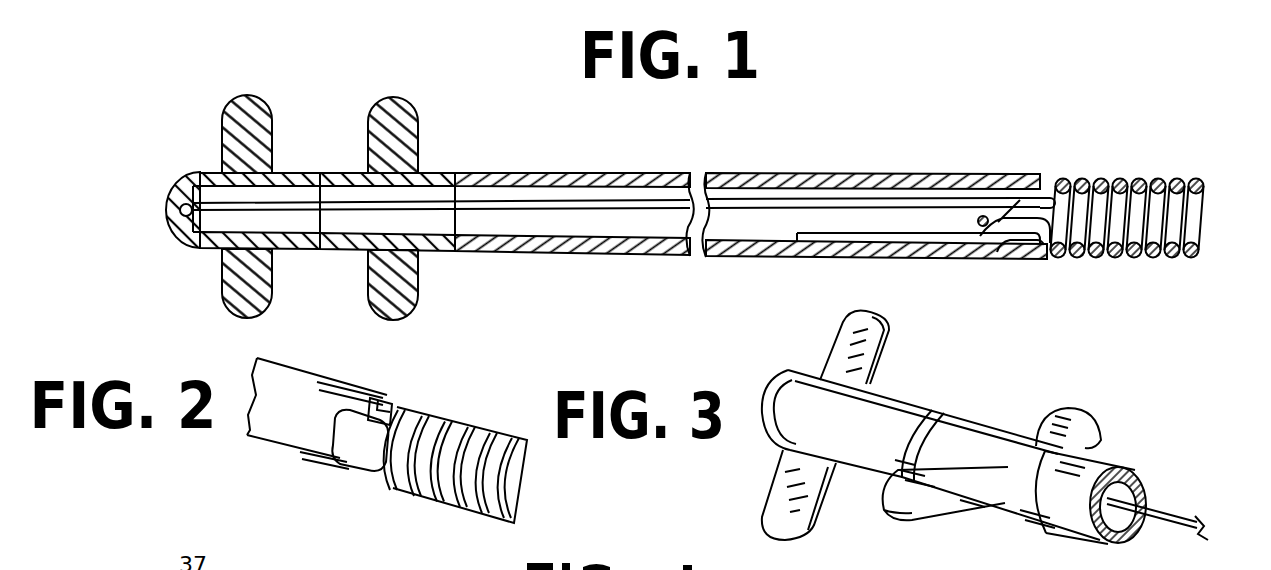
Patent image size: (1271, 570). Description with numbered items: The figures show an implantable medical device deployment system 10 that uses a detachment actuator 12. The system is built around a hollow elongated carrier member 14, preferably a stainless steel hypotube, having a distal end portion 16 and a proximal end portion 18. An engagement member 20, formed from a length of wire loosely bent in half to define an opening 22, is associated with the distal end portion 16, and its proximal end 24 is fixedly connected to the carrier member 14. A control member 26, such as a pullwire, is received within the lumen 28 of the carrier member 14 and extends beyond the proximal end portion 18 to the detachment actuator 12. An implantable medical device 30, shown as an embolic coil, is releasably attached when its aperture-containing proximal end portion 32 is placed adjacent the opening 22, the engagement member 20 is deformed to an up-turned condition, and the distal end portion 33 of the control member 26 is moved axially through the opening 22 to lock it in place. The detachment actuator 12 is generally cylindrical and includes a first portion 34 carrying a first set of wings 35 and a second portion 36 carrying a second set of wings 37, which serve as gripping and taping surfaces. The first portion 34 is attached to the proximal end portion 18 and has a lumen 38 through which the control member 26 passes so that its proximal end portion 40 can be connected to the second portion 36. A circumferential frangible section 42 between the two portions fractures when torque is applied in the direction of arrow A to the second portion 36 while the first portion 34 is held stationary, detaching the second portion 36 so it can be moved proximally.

In FIG. 1, the implantable medical device deployment system 10 is at (846, 141).
In FIG. 1, the detachment actuator 12 is at (325, 108).
In FIG. 1, the carrier member 14 is at (640, 257).
In FIG. 3, the carrier member 14 is at (1157, 519).
In FIG. 1, the distal end portion 16 is at (1003, 177).
In FIG. 1, the proximal end portion 18 is at (473, 172).
In FIG. 1, the engagement member 20 is at (953, 232).
In FIG. 2, the engagement member 20 is at (390, 412).
In FIG. 2, the opening 22 is at (355, 460).
In FIG. 1, the proximal end of the engagement member 24 is at (797, 248).
In FIG. 1, the control member 26 is at (620, 202).
In FIG. 1, the lumen 28 is at (710, 250).
In FIG. 1, the implantable medical device 30 is at (1104, 175).
In FIG. 2, the implantable medical device 30 is at (460, 465).
In FIG. 2, the proximal end portion of the implantable medical device 32 is at (365, 462).
In FIG. 1, the distal end portion of the control member 33 is at (1045, 205).
In FIG. 2, the distal end portion of the control member 33 is at (400, 418).
In FIG. 1, the first portion 34 is at (423, 170).
In FIG. 3, the first portion 34 is at (973, 443).
In FIG. 1, the first set of wings 35 is at (387, 97).
In FIG. 3, the first set of wings 35 is at (1078, 425).
In FIG. 1, the second portion 36 is at (278, 254).
In FIG. 3, the second portion 36 is at (806, 385).
In FIG. 1, the second set of wings 37 is at (240, 98).
In FIG. 3, the second set of wings 37 is at (872, 318).
In FIG. 1, the lumen 38 is at (423, 236).
In FIG. 1, the proximal end portion of the control member 40 is at (183, 186).
In FIG. 1, the frangible section 42 is at (320, 250).
In FIG. 3, the frangible section 42 is at (930, 412).